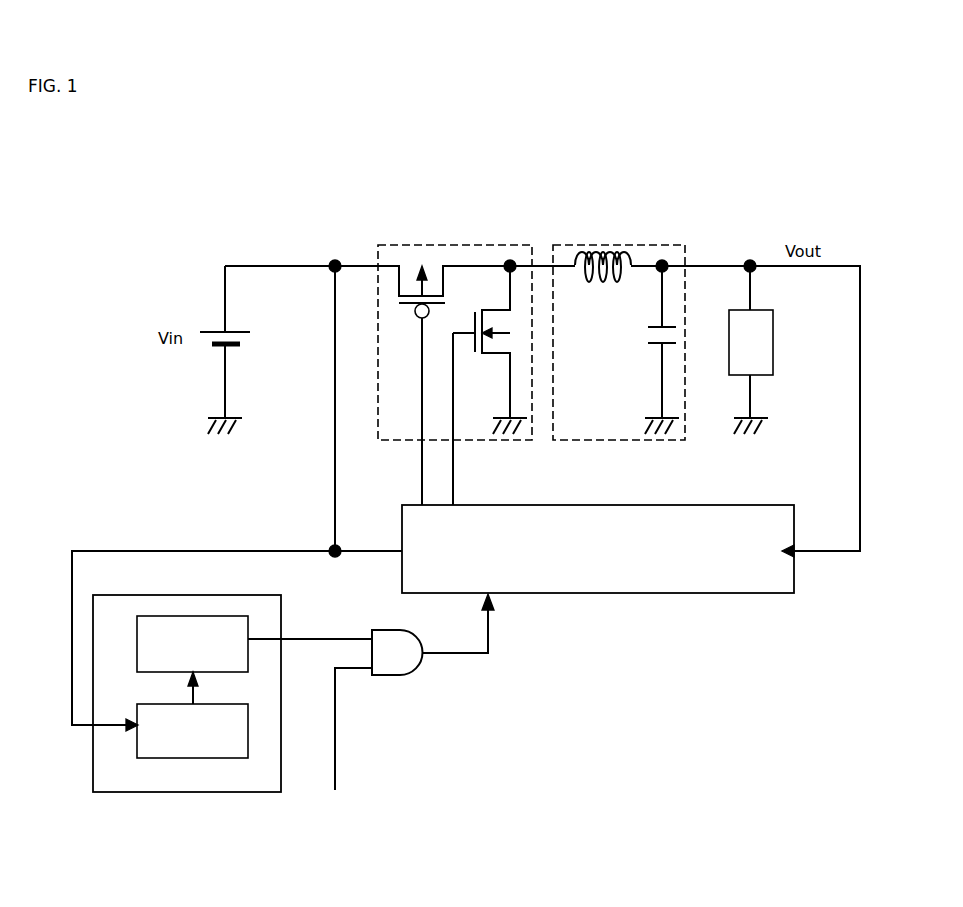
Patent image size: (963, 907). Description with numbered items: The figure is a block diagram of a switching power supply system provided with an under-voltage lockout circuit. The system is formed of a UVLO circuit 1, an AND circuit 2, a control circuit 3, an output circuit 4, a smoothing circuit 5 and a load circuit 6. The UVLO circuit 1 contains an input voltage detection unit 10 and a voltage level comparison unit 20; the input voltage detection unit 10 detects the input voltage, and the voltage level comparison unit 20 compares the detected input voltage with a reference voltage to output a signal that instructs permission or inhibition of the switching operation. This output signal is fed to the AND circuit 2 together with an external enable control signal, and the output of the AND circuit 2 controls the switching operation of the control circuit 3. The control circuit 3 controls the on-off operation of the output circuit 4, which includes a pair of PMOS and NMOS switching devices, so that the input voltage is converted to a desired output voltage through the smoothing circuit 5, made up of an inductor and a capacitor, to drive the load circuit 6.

The UVLO circuit 1 is at (168, 715).
The AND circuit 2 is at (400, 678).
The control circuit 3 is at (646, 595).
The output circuit 4 is at (472, 244).
The smoothing circuit 5 is at (635, 244).
The load circuit 6 is at (774, 343).
The input voltage detection unit 10 is at (135, 701).
The voltage level comparison unit 20 is at (135, 636).